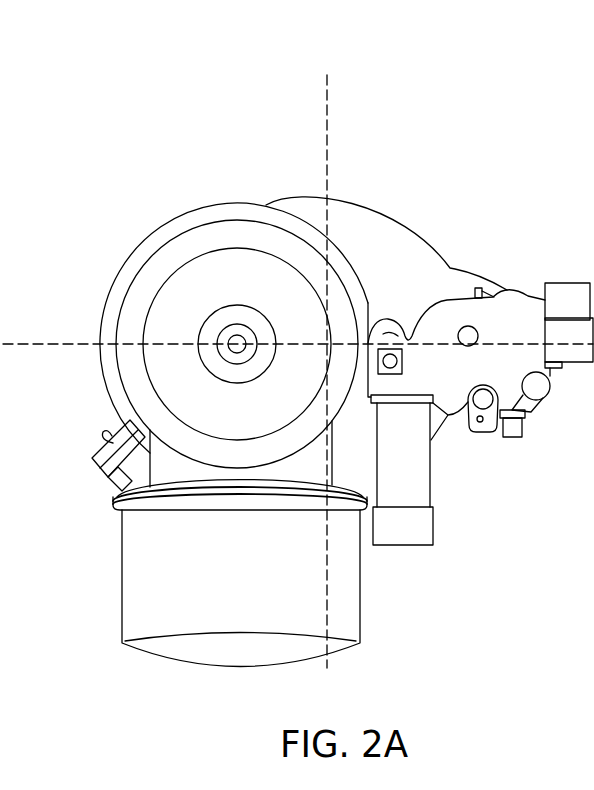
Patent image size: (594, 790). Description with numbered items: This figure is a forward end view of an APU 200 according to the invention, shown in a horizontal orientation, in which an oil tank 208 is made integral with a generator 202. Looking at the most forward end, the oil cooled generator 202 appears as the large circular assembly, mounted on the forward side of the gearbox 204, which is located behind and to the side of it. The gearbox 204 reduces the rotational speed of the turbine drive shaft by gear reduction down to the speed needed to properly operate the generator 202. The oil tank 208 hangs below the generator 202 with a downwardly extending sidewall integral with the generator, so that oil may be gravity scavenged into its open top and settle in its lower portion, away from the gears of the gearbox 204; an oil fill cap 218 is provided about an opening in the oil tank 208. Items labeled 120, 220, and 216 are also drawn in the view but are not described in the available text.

The APU 200 is at (441, 111).
The generator 202 is at (172, 220).
The gearbox 204 is at (370, 213).
The shaft 120 is at (327, 343).
The axis 220 is at (53, 344).
The oil fill cap 218 is at (108, 452).
The bracket 216 is at (453, 400).
The oil tank 208 is at (338, 595).